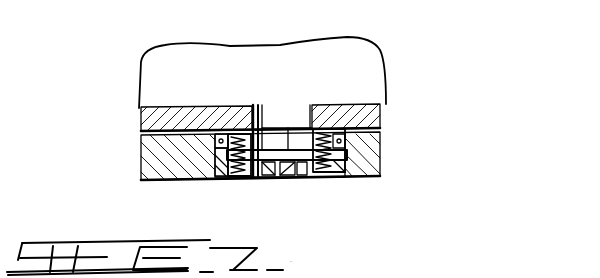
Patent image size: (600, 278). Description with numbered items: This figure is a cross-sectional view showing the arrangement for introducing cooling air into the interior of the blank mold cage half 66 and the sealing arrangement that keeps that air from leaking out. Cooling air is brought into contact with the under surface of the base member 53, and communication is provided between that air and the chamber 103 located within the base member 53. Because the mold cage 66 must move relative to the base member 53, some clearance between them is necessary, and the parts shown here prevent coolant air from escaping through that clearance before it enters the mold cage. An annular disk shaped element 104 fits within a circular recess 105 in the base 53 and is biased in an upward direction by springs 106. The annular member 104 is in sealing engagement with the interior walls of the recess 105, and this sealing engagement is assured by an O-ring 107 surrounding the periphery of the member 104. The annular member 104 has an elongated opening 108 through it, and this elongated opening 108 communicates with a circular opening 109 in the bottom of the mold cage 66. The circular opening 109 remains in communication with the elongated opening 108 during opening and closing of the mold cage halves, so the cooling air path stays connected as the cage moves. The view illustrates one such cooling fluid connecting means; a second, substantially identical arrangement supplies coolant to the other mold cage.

The base member 53 is at (370, 158).
The blank mold cage half 66 is at (373, 110).
The chamber 103 is at (292, 170).
The annular disk shaped element 104 is at (223, 130).
The circular recess 105 is at (214, 176).
The springs 106 is at (240, 178).
The O-ring 107 is at (343, 137).
The elongated opening 108 is at (277, 135).
The circular opening 109 is at (305, 135).